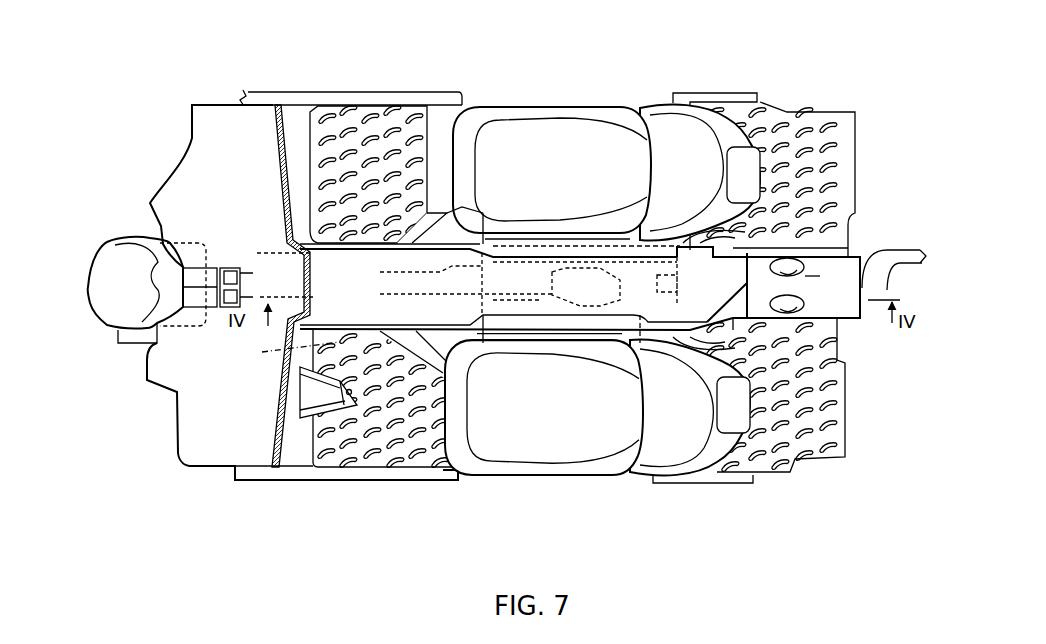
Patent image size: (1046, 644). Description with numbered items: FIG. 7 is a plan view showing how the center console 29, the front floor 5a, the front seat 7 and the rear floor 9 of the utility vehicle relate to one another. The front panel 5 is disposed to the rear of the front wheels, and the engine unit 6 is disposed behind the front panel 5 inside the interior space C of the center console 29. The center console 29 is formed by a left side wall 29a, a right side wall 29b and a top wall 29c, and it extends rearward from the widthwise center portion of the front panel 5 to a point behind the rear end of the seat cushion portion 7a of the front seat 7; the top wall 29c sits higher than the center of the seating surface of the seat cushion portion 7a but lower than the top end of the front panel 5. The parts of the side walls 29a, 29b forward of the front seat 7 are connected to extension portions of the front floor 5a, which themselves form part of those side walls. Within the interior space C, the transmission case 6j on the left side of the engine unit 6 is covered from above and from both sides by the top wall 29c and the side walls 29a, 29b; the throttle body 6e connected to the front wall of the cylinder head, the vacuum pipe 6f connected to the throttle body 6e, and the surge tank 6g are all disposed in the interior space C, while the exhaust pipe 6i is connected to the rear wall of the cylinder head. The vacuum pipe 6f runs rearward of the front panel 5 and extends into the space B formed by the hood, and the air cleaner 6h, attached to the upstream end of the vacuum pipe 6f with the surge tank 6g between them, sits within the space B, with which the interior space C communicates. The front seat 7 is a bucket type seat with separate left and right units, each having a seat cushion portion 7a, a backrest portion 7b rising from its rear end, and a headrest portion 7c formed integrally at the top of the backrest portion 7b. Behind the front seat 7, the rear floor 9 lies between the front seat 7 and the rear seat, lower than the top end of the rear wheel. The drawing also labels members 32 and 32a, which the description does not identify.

The front panel 5 is at (285, 434).
The front floor 5a is at (370, 107).
The engine unit 6 is at (667, 320).
The throttle body 6e is at (652, 281).
The vacuum pipe 6f is at (445, 263).
The surge tank 6g is at (257, 300).
The air cleaner 6h is at (97, 262).
The exhaust pipe 6i is at (812, 277).
The transmission case 6j is at (530, 355).
The front seat 7 is at (673, 283).
The seat cushion portion 7a is at (510, 107).
The backrest portion 7b is at (710, 107).
The headrest portion 7c is at (760, 170).
The rear floor 9 is at (790, 110).
The center console 29 is at (592, 333).
The left side wall 29a is at (553, 315).
The right side wall 29b is at (560, 257).
The top wall 29c is at (514, 343).
The rear cross member 32 is at (843, 310).
The through hole 32a is at (803, 257).
The space B is at (136, 363).
The interior space C is at (288, 353).